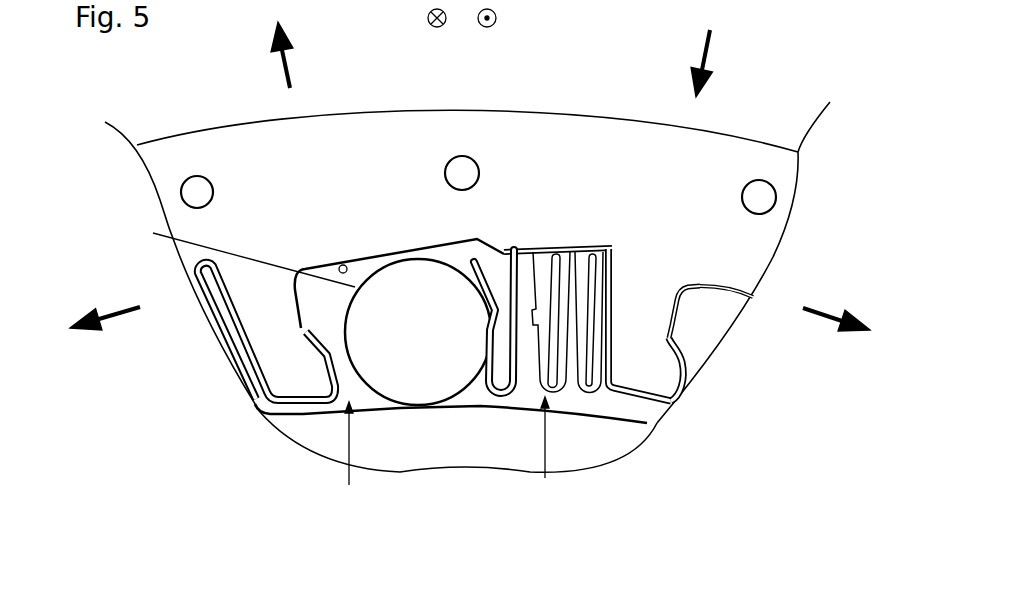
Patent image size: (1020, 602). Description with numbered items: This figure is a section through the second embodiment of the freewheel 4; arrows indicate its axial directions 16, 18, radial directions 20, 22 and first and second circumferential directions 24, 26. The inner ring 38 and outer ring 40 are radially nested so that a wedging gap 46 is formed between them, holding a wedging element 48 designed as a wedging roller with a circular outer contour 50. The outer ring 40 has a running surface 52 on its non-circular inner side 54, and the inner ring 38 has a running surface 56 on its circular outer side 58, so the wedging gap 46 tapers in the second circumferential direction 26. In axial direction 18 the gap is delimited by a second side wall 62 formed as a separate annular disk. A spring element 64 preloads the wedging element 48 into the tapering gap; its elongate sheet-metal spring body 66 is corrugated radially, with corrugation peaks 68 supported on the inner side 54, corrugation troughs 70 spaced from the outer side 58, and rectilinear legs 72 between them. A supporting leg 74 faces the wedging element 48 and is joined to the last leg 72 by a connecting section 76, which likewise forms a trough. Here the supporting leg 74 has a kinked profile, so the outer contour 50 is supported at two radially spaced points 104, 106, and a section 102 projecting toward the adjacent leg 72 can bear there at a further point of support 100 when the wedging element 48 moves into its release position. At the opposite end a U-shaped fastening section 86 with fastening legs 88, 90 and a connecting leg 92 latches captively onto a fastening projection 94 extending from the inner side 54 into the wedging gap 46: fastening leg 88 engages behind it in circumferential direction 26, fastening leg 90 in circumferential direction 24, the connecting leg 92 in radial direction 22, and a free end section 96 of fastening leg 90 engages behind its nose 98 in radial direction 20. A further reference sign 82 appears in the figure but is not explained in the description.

The freewheel 4 is at (782, 91).
The axial direction 16 is at (497, 18).
The axial direction 18 is at (428, 18).
The radial direction 20 is at (286, 67).
The radial direction 22 is at (710, 50).
The first circumferential direction 24 is at (822, 318).
The second circumferential direction 26 is at (123, 318).
The inner ring 38 is at (320, 440).
The outer ring 40 is at (182, 152).
The wedging gap 46 is at (349, 455).
The wedging element 48 is at (383, 378).
The outer contour 50 is at (238, 253).
The running surface 52 is at (346, 265).
The inner side 54 is at (442, 244).
The running surface 56 is at (375, 406).
The outer side 58 is at (263, 413).
The second side wall 62 is at (318, 314).
The spring element 64 is at (545, 450).
The spring body 66 is at (612, 416).
The corrugation peaks 68 is at (519, 250).
The corrugation troughs 70 is at (556, 396).
The legs 72 is at (502, 335).
The supporting leg 74 is at (484, 317).
The connecting section 76 is at (500, 399).
The spring element 82 is at (547, 252).
The fastening section 86 is at (683, 411).
The fastening leg 88 is at (633, 312).
The fastening leg 90 is at (668, 370).
The connecting leg 92 is at (645, 398).
The fastening projection 94 is at (753, 293).
The free end section 96 is at (676, 342).
The nose 98 is at (686, 372).
The further point of support 100 is at (532, 262).
The projecting section 102 is at (500, 252).
The point 104 is at (486, 245).
The point 106 is at (488, 288).